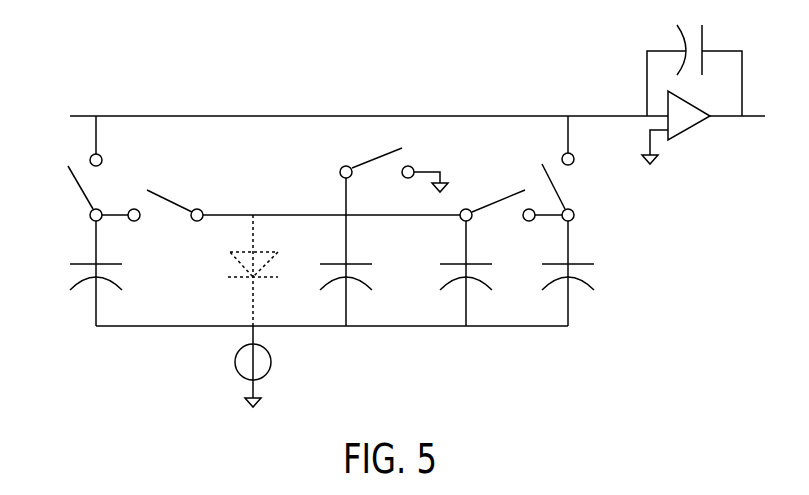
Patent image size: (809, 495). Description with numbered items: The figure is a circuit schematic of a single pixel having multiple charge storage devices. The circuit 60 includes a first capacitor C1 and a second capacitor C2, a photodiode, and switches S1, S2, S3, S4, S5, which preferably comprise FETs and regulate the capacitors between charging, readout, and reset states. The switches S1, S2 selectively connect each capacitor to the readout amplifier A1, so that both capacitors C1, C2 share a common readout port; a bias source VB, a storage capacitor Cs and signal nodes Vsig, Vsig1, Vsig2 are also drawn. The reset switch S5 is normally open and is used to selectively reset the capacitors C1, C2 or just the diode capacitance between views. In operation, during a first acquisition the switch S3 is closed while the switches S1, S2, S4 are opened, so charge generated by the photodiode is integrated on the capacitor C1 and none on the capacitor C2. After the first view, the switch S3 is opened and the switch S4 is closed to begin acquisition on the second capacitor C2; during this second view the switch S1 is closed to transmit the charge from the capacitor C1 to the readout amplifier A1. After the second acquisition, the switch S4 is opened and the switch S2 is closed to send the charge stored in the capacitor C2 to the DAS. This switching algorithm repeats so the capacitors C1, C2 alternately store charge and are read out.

The circuit 60 is at (393, 81).
The readout amplifier A1 is at (696, 124).
The switch S1 is at (90, 187).
The switch S2 is at (557, 187).
The switch S3 is at (175, 201).
The switch S4 is at (492, 201).
The reset switch S5 is at (394, 165).
The first capacitor C1 is at (81, 273).
The second capacitor C2 is at (581, 273).
The storage capacitor Cs is at (479, 273).
The bias voltage source VB is at (269, 366).
The signal node voltage Vsig is at (331, 203).
The first signal voltage Vsig1 is at (46, 216).
The second signal voltage Vsig2 is at (608, 216).